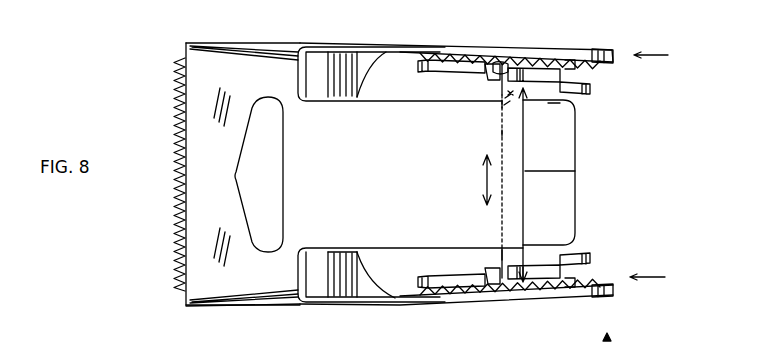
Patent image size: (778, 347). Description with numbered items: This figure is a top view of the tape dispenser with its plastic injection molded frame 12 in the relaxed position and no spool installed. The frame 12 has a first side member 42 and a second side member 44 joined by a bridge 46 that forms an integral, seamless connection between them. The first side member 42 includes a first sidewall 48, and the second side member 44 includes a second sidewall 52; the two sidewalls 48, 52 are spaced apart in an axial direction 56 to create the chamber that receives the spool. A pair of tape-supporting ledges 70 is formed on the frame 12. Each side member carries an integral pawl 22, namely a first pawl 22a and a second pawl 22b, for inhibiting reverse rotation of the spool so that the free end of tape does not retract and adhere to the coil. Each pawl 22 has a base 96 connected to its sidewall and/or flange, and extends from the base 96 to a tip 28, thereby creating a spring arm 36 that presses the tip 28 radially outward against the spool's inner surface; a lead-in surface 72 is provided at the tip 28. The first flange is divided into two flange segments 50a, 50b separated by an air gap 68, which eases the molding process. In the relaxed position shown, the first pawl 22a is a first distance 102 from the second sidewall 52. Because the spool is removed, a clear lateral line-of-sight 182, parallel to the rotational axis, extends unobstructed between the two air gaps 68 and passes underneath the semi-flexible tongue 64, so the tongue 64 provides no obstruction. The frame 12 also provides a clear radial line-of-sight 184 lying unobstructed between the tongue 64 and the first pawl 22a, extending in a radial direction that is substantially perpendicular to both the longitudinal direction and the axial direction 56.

The frame 12 is at (218, 309).
The bridge 46 is at (210, 200).
The first sidewall 48 is at (455, 56).
The second sidewall 52 is at (396, 290).
The tape-supporting ledges 70 is at (340, 273).
The first flange segment 50a is at (426, 75).
The second flange segment 50b is at (580, 94).
The lateral line-of-sight 182 is at (485, 102).
The radial line-of-sight 184 is at (508, 103).
The lead-in surface 72 is at (508, 94).
The tip 28 is at (500, 63).
The air gap 68 is at (489, 85).
The first pawl 22a is at (530, 70).
The second pawl 22b is at (540, 283).
The pawl 22 is at (535, 85).
The first side member 42 is at (669, 55).
The second side member 44 is at (666, 277).
The base 96 is at (562, 80).
The spring arm 36 is at (550, 104).
The first distance 102 is at (575, 171).
The tongue 64 is at (575, 210).
The axial direction 56 is at (478, 183).